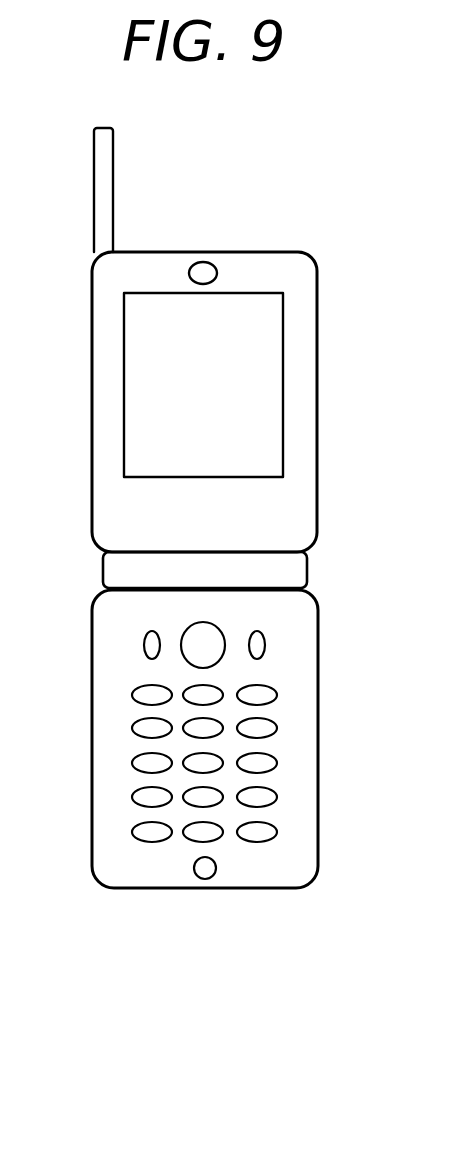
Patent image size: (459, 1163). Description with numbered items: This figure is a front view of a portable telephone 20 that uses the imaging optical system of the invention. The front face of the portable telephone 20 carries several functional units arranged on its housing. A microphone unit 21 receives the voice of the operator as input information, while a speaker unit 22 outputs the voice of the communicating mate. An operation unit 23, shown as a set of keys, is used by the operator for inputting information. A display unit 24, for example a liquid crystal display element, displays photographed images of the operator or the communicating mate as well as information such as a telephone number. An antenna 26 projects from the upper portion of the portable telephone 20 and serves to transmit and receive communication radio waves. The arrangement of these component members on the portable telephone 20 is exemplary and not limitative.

The portable telephone 20 is at (335, 497).
The microphone unit 21 is at (201, 878).
The speaker unit 22 is at (203, 270).
The operation unit 23 is at (72, 862).
The display unit 24 is at (148, 402).
The antenna 26 is at (103, 197).